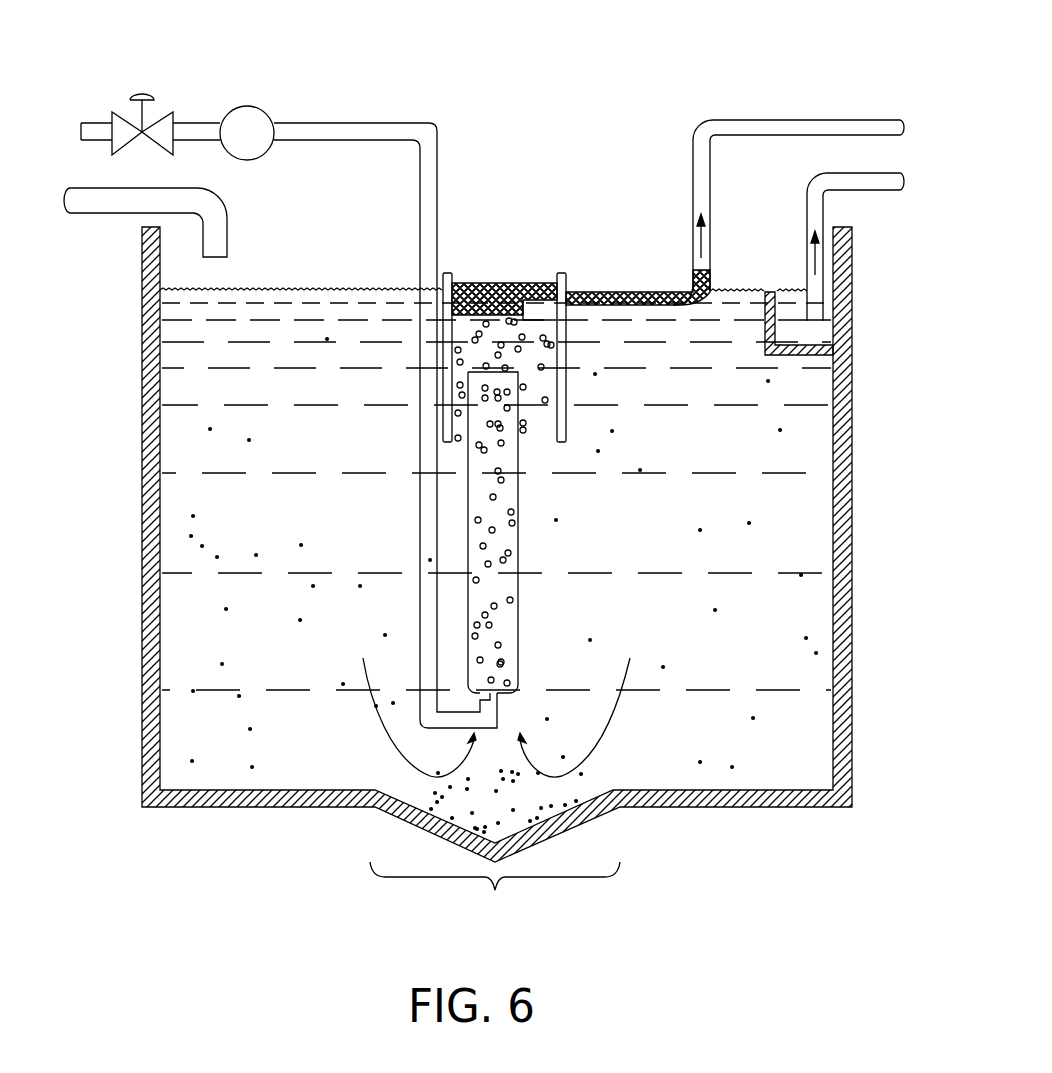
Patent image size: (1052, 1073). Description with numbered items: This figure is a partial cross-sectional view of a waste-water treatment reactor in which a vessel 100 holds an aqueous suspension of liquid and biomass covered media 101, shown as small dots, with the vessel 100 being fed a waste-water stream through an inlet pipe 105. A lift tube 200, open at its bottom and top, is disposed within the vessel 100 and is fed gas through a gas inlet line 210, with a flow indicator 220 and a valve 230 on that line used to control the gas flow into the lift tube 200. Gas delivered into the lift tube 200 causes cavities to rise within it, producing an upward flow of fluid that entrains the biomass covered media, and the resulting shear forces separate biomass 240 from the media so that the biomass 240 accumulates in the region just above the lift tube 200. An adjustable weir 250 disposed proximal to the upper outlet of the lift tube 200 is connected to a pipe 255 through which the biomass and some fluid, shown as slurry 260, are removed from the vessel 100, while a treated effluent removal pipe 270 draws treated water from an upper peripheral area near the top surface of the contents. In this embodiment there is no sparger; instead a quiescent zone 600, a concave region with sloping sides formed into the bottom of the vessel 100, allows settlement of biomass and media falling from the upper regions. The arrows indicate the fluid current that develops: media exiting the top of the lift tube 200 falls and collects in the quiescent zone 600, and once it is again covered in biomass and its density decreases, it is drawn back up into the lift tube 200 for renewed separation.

The vessel 100 is at (843, 755).
The biomass covered media 101 is at (217, 557).
The inlet pipe 105 is at (105, 198).
The lift tube 200 is at (517, 568).
The gas inlet line 210 is at (437, 134).
The flow indicator 220 is at (251, 108).
The valve 230 is at (142, 93).
The biomass 240 is at (513, 288).
The weir 250 is at (565, 383).
The pipe 255 is at (838, 128).
The slurry 260 is at (635, 292).
The treated effluent removal pipe 270 is at (882, 192).
The quiescent zone 600 is at (495, 892).